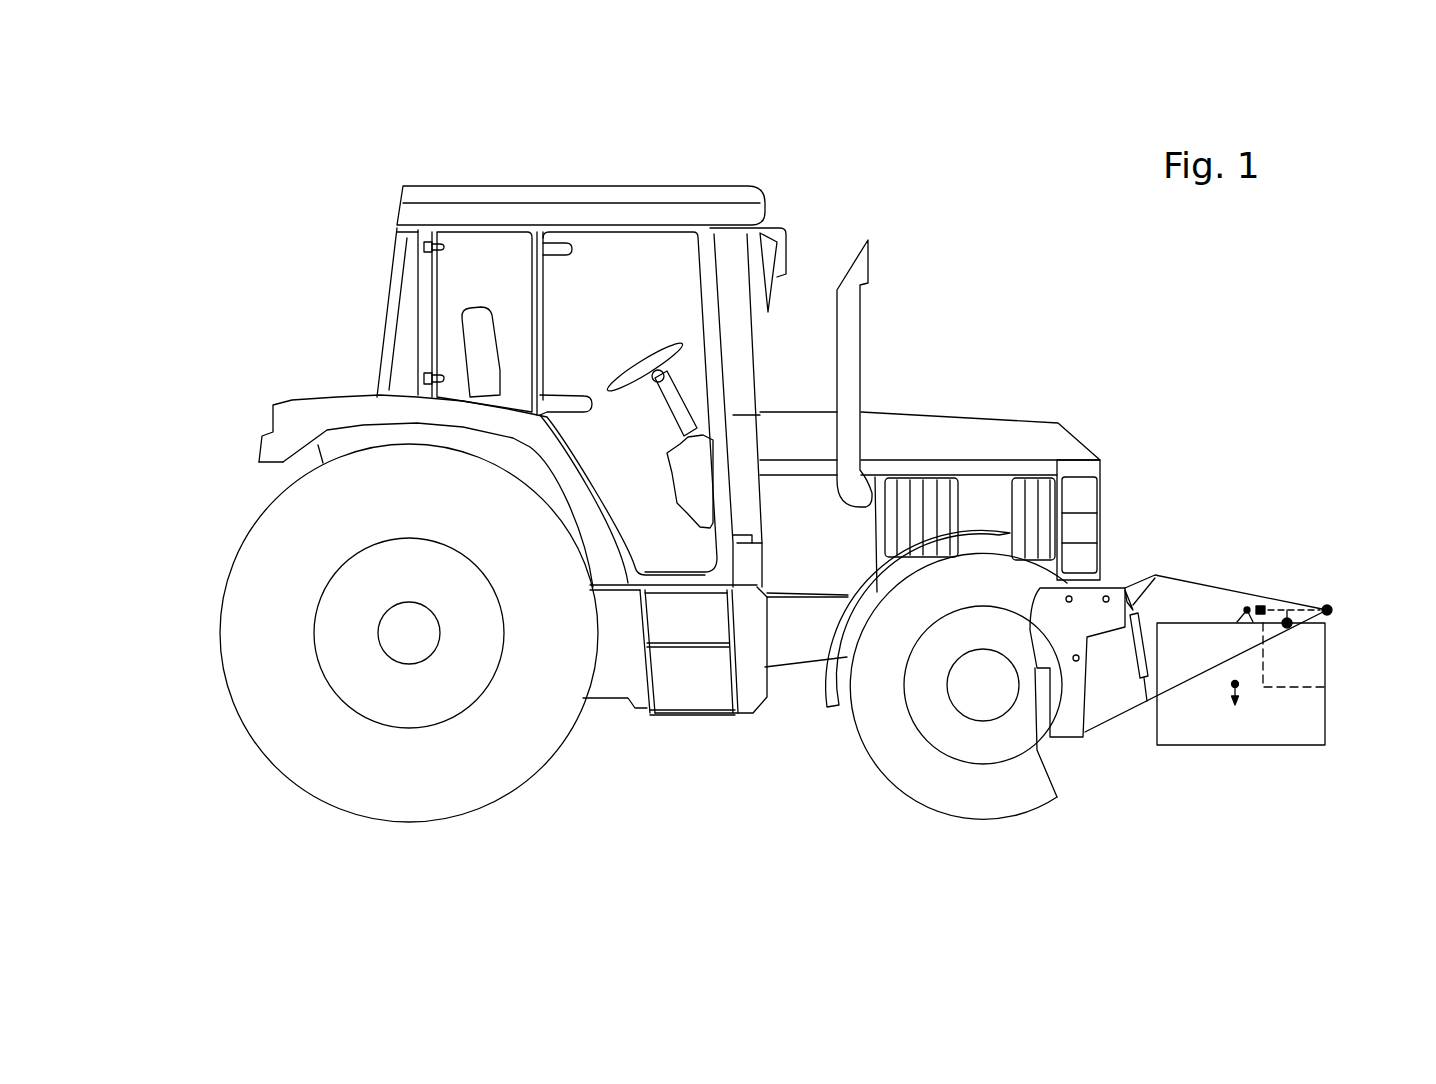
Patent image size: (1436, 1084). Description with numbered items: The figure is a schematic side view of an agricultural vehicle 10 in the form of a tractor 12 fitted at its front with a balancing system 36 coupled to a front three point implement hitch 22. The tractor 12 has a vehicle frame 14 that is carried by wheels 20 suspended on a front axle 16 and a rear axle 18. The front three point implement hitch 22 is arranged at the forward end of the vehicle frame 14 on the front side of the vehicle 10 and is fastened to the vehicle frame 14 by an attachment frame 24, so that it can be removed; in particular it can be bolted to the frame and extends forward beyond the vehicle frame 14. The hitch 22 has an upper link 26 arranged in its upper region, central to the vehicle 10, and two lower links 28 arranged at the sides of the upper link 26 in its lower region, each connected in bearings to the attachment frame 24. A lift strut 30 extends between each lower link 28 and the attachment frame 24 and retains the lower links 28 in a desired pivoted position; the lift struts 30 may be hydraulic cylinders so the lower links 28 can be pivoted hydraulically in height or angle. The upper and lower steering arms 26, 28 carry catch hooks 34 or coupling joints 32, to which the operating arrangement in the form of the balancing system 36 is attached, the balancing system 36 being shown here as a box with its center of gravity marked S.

The agricultural vehicle 10 is at (935, 242).
The tractor 12 is at (707, 186).
The vehicle frame 14 is at (800, 640).
The front axle 16 is at (977, 693).
The rear axle 18 is at (409, 635).
The wheels 20 is at (245, 662).
The front three point implement hitch 22 is at (1160, 600).
The attachment frame 24 is at (1077, 623).
The upper link 26 is at (1250, 608).
The lower links 28 is at (1181, 680).
The lift strut 30 is at (1142, 688).
The coupling joints 32 is at (1332, 610).
The catch hooks 34 is at (1292, 625).
The balancing system 36 is at (1274, 784).